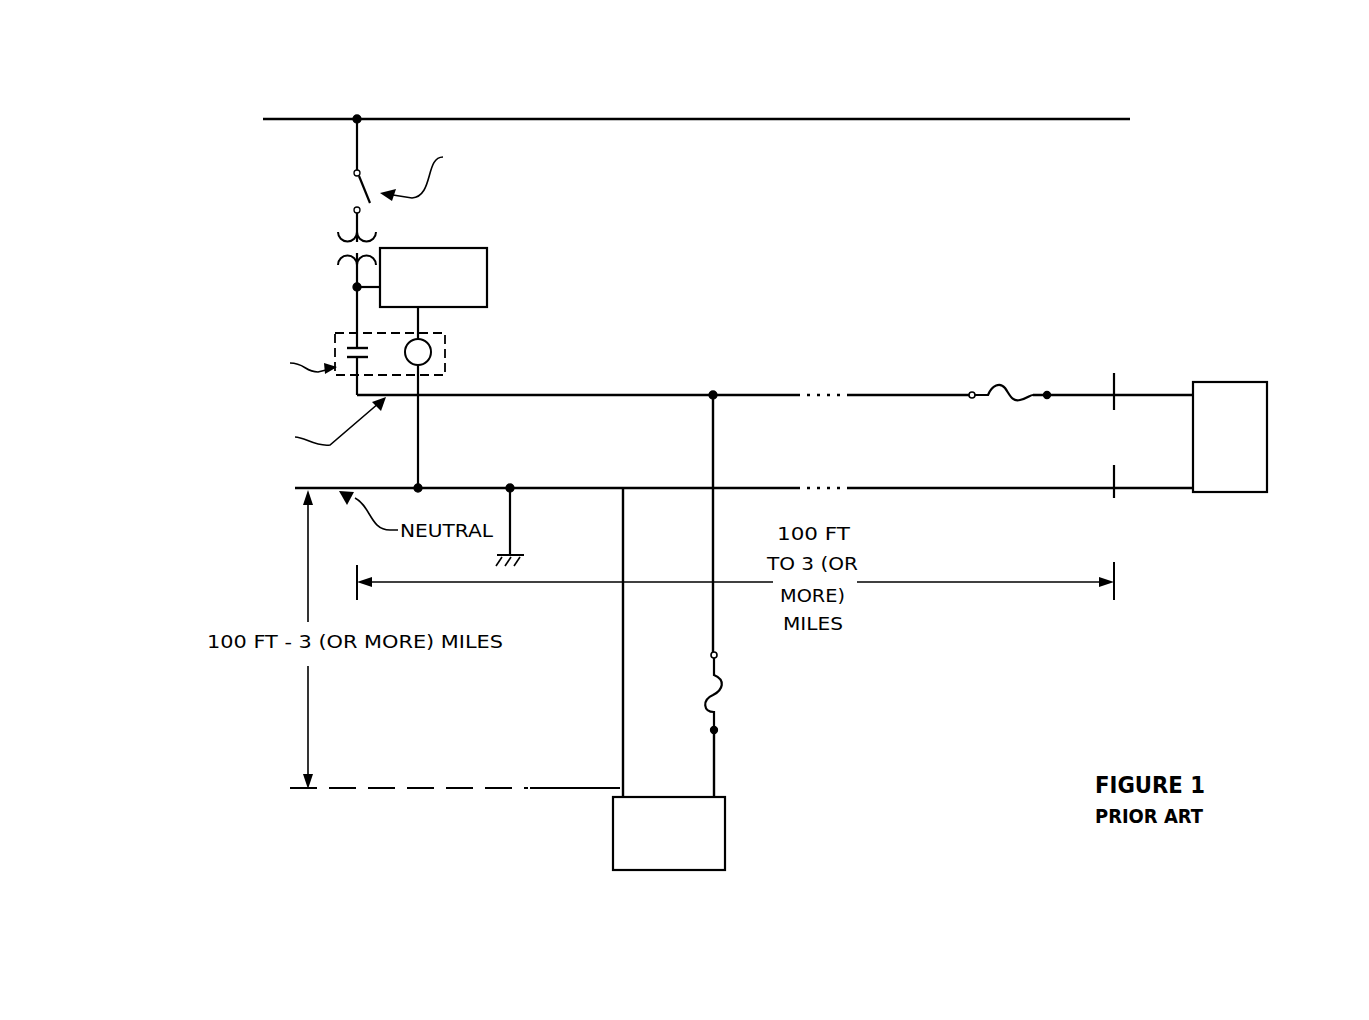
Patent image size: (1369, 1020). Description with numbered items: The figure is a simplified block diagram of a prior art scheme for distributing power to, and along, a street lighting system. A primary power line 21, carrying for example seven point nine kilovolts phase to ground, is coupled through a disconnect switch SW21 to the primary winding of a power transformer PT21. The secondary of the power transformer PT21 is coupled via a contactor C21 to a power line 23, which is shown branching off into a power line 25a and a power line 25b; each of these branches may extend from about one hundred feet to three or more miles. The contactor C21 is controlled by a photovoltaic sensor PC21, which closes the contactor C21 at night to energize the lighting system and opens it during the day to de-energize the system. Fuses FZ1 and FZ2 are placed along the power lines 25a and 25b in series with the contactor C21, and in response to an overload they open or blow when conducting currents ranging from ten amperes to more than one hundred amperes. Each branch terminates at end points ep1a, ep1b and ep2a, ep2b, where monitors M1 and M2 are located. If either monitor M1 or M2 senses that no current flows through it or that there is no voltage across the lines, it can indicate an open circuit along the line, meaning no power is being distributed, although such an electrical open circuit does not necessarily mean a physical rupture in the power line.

The primary power line 21 is at (453, 119).
The disconnect switch SW21 is at (352, 196).
The power transformer PT21 is at (335, 250).
The photovoltaic sensor PC21 is at (487, 285).
The contactor C21 is at (335, 343).
The power line 23 is at (480, 396).
The power line branch 25a is at (768, 395).
The power line branch 25b is at (713, 452).
The fuse FZ1 is at (1002, 387).
The fuse FZ2 is at (720, 687).
The end point ep1a is at (1114, 378).
The end point ep1b is at (1114, 498).
The end point ep2a is at (717, 787).
The end point ep2b is at (623, 778).
The monitor M1 is at (1240, 395).
The monitor M2 is at (662, 860).